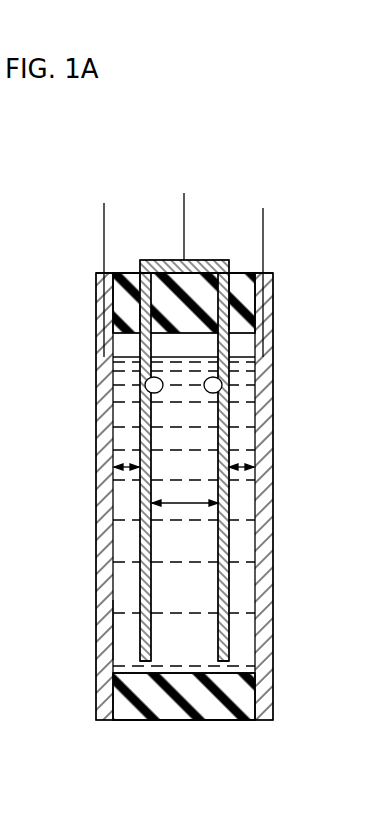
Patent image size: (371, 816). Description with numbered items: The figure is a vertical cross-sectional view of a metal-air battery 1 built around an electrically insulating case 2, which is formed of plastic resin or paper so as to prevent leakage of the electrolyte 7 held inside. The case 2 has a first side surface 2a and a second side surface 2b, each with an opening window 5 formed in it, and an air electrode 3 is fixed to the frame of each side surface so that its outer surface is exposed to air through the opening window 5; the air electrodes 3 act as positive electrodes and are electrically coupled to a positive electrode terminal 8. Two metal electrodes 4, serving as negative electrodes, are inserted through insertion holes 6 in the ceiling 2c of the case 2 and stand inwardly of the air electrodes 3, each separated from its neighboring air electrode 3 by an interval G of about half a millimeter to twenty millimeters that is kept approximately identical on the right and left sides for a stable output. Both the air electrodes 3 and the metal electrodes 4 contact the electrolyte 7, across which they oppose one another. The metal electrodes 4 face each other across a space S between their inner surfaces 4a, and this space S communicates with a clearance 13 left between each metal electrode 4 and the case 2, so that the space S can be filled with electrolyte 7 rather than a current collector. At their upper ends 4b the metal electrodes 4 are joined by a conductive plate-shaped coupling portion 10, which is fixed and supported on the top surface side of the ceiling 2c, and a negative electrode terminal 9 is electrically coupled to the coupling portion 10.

The metal-air battery 1 is at (278, 210).
The case 2 is at (123, 282).
The first side surface 2a is at (113, 704).
The second side surface 2b is at (258, 690).
The ceiling 2c is at (247, 282).
The air electrode 3 is at (105, 583).
The metal electrode 4 is at (145, 406).
The inner surface 4a is at (150, 387).
The upper end 4b is at (128, 314).
The opening window 5 is at (99, 497).
The insertion hole 6 is at (146, 278).
The electrolyte 7 is at (128, 630).
The positive electrode terminal 8 is at (104, 232).
The negative electrode terminal 9 is at (187, 205).
The coupling portion 10 is at (215, 260).
The clearance 13 is at (222, 671).
The interval (gap) G is at (126, 462).
The space S is at (184, 504).